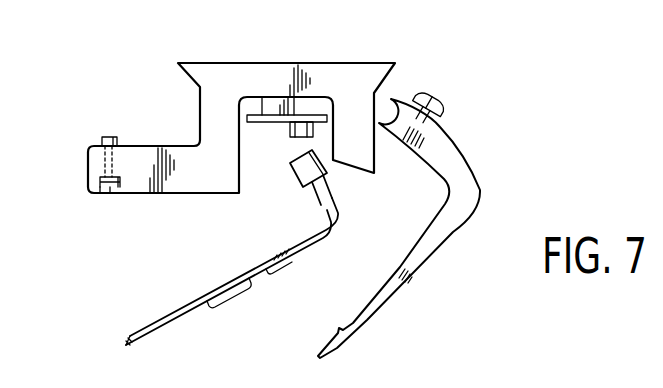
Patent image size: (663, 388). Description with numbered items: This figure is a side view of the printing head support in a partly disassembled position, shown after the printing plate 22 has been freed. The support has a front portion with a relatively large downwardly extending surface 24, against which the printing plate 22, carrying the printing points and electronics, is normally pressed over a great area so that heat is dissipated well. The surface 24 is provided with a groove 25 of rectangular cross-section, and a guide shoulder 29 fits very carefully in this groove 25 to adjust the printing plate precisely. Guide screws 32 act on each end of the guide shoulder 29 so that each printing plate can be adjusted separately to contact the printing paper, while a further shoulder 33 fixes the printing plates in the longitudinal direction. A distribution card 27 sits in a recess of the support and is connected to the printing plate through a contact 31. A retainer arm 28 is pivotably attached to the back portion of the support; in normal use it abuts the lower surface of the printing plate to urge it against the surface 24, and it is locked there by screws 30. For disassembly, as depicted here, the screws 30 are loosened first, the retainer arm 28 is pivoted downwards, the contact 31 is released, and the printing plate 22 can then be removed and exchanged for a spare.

The printing plate 22 is at (167, 322).
The downwardly extending surface 24 is at (165, 194).
The groove 25 is at (108, 176).
The distribution card 27 is at (275, 123).
The retainer arm 28 is at (466, 200).
The guide shoulder 29 is at (100, 190).
The screws 30 is at (427, 100).
The contact 31 is at (295, 182).
The guide screws 32 is at (107, 137).
The shoulder 33 is at (103, 198).